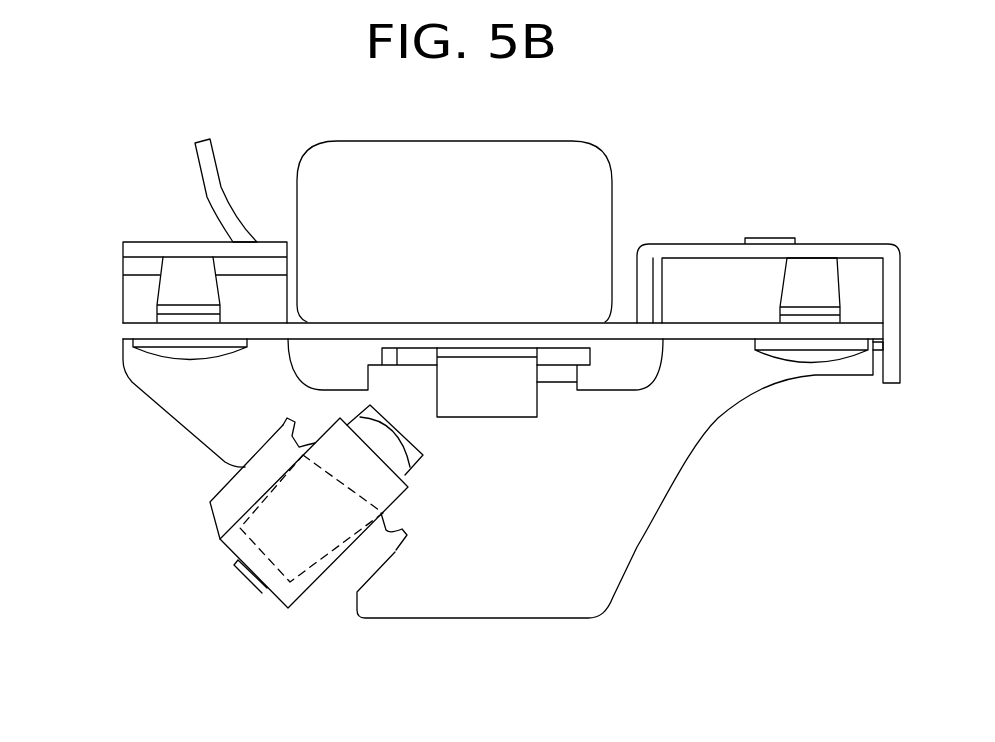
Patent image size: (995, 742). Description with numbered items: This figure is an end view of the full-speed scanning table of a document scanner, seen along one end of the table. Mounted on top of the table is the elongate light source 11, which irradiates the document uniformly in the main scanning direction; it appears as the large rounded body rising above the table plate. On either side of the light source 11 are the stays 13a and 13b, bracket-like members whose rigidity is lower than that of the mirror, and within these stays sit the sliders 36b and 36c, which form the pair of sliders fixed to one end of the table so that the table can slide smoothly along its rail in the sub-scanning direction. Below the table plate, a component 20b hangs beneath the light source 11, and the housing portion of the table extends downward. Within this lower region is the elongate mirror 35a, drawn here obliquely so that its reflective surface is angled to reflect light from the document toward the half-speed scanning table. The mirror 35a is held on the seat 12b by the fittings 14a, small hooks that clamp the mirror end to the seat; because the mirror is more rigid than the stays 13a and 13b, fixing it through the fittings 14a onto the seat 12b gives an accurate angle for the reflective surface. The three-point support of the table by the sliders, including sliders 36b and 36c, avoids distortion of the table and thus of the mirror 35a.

The elongate light source 11 is at (462, 153).
The stay 13a is at (694, 248).
The stay 13b is at (137, 246).
The slider 36b is at (812, 270).
The slider 36c is at (192, 267).
The connector block 20b is at (555, 358).
The seat 12b is at (262, 530).
The elongate mirror 35a is at (348, 560).
The fitting 14a is at (283, 423).